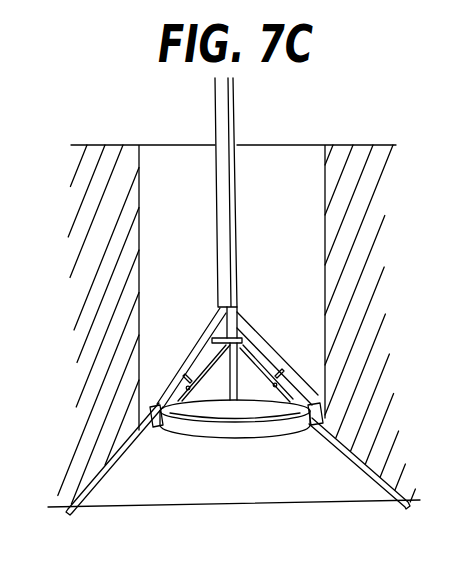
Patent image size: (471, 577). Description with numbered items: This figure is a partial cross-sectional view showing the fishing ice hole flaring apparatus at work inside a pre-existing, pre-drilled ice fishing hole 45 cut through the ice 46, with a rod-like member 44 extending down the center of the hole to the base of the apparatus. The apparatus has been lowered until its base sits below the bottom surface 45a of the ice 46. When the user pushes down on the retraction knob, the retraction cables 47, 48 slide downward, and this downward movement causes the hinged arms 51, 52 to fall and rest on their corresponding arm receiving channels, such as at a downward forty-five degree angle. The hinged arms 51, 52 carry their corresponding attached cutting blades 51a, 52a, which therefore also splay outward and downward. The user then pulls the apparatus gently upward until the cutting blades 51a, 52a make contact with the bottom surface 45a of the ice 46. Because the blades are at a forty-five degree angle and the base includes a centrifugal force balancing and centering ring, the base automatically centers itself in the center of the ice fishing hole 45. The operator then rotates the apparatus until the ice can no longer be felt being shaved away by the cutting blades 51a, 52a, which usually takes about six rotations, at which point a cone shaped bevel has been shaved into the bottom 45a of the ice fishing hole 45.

The pipe 44 is at (237, 116).
The ice fishing hole 45 is at (165, 137).
The bottom surface of the ice 45a is at (404, 500).
The ice 46 is at (358, 243).
The retraction cable 47 is at (193, 382).
The retraction cable 48 is at (238, 333).
The hinged arm 51 is at (163, 403).
The hinged arm 52 is at (242, 368).
The cutting blade 51a is at (124, 457).
The cutting blade 52a is at (352, 457).